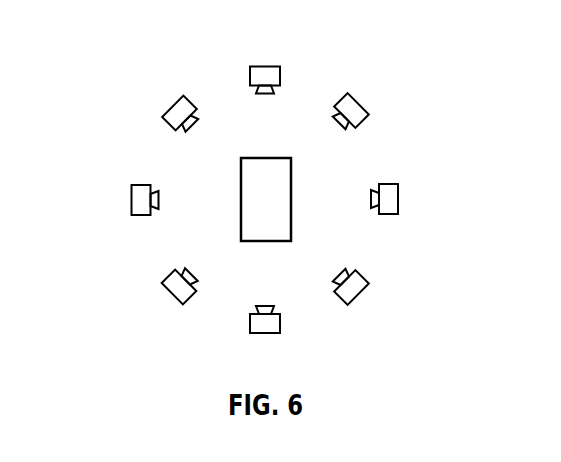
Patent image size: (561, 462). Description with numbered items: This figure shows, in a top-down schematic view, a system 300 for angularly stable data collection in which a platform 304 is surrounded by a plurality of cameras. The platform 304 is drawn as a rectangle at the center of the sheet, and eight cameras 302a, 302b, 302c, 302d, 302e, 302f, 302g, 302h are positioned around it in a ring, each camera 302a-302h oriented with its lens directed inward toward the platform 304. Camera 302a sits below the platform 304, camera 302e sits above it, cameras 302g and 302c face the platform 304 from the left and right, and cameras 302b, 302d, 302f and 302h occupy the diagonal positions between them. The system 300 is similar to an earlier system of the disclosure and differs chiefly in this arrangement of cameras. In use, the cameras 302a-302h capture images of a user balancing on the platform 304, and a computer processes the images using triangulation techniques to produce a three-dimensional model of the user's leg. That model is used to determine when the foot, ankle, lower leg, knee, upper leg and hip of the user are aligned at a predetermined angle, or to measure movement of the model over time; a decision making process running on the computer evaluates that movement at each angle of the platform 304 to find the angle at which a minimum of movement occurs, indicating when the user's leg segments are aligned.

The system for angularly stable data collection 300 is at (326, 44).
The camera 302a is at (265, 333).
The camera 302b is at (360, 293).
The camera 302c is at (398, 200).
The camera 302d is at (362, 101).
The camera 302e is at (266, 67).
The camera 302f is at (170, 105).
The camera 302g is at (132, 200).
The camera 302h is at (172, 290).
The platform 304 is at (291, 189).